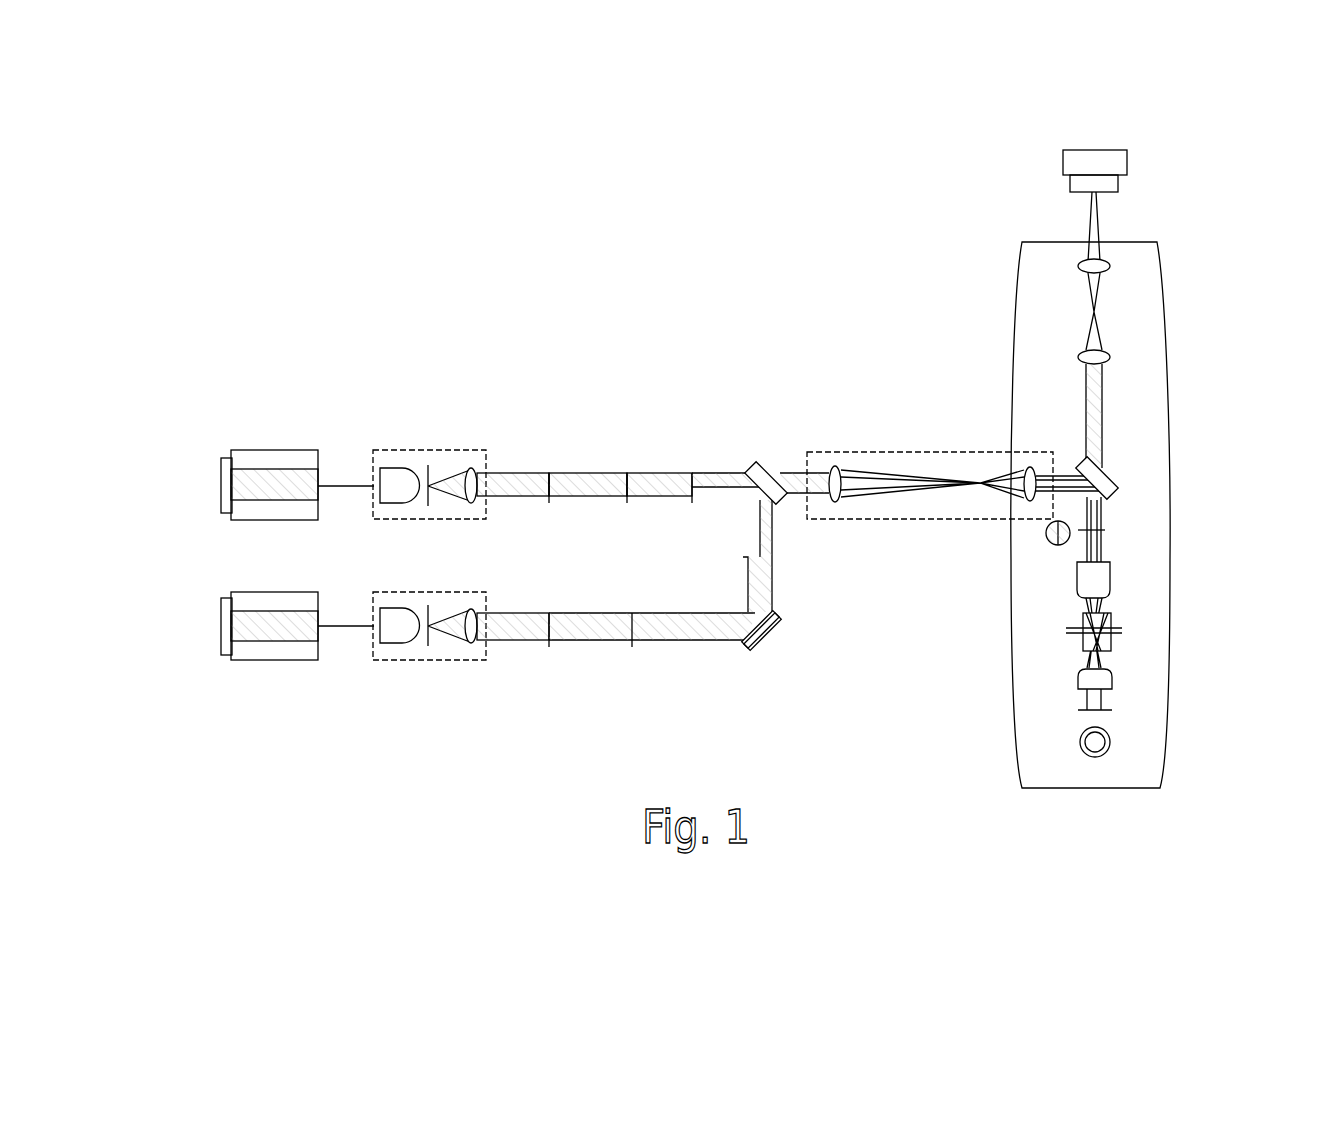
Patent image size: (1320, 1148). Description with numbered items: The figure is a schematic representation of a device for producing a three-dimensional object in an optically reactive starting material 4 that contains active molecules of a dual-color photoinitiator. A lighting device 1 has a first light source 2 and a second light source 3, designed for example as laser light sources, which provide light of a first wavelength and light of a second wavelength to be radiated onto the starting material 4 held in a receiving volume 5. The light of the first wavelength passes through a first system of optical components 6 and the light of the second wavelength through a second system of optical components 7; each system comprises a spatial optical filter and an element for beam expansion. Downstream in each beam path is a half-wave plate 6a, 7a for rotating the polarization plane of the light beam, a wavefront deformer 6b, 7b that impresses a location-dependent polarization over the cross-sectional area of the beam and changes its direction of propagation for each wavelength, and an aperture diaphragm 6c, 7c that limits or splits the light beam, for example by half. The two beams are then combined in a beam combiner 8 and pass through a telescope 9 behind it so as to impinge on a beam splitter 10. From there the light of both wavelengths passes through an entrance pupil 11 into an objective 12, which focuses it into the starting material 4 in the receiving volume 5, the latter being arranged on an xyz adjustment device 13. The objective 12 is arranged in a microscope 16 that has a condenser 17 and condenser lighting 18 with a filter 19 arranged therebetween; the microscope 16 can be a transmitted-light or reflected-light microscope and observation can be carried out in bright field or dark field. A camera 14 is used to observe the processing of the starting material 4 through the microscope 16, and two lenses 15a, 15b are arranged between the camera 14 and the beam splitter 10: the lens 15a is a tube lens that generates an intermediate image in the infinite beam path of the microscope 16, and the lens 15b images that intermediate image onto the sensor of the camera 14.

The lighting device 1 is at (248, 556).
The first light source 2 is at (272, 455).
The second light source 3 is at (270, 655).
The optically reactive starting material 4 is at (1080, 636).
The receiving volume 5 is at (1080, 623).
The first system of optical components 6 is at (430, 458).
The half-wave plate 6a is at (549, 472).
The wavefront deformer 6b is at (627, 472).
The aperture diaphragm 6c is at (692, 472).
The second system of optical components 7 is at (433, 655).
The half-wave plate 7a is at (549, 650).
The wavefront deformer 7b is at (632, 650).
The aperture diaphragm 7c is at (772, 556).
The beam combiner 8 is at (756, 460).
The telescope 9 is at (965, 455).
The beam splitter 10 is at (1115, 471).
The entrance pupil 11 is at (1105, 528).
The objective 12 is at (1113, 567).
The xyz adjustment device 13 is at (1122, 628).
The camera 14 is at (1117, 163).
The tube lens 15a is at (1110, 268).
The lens 15b is at (1110, 357).
The microscope 16 is at (1025, 733).
The condenser 17 is at (1113, 678).
The condenser lighting 18 is at (1110, 742).
The filter 19 is at (1105, 707).